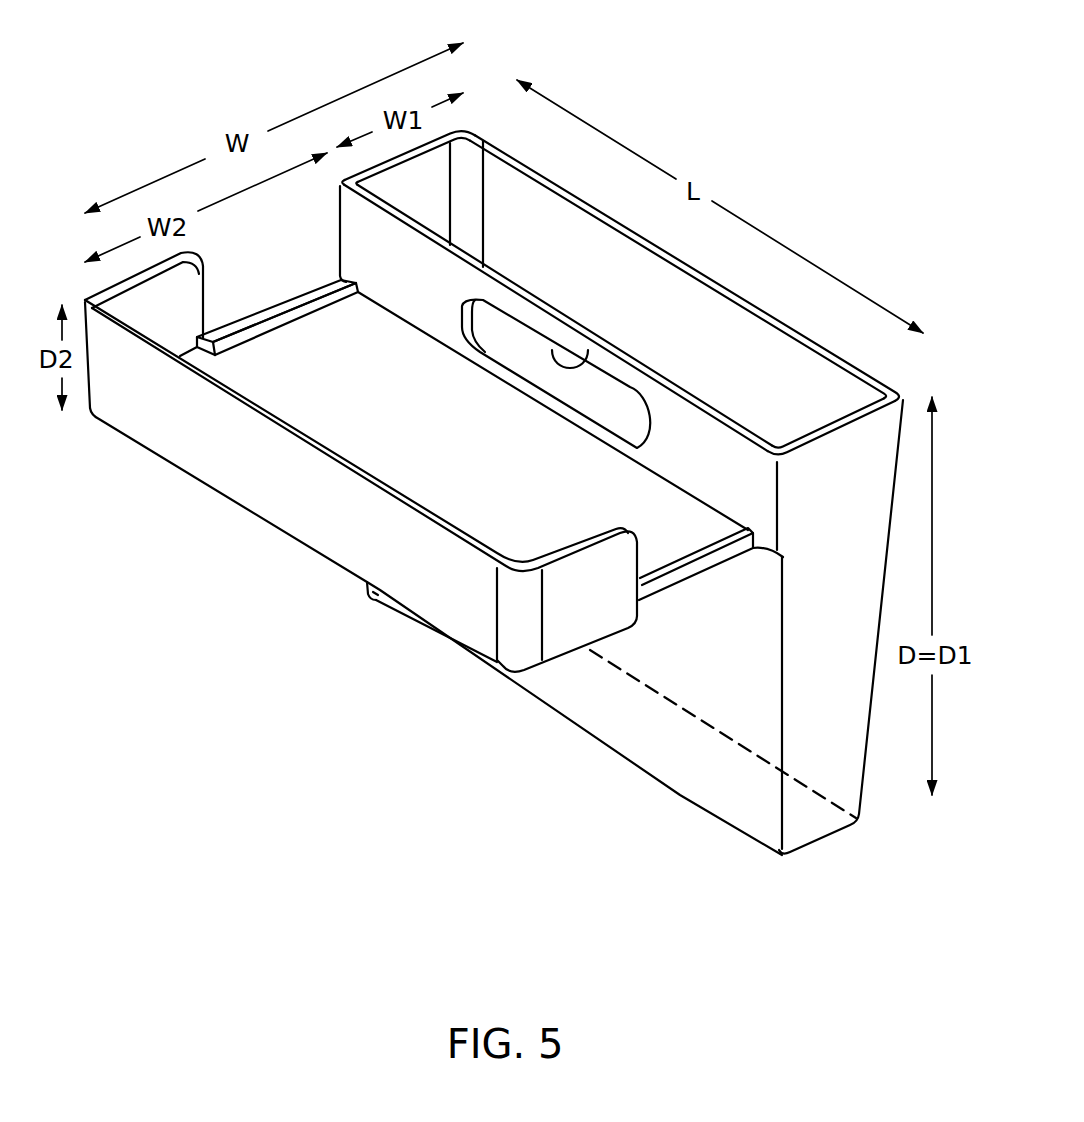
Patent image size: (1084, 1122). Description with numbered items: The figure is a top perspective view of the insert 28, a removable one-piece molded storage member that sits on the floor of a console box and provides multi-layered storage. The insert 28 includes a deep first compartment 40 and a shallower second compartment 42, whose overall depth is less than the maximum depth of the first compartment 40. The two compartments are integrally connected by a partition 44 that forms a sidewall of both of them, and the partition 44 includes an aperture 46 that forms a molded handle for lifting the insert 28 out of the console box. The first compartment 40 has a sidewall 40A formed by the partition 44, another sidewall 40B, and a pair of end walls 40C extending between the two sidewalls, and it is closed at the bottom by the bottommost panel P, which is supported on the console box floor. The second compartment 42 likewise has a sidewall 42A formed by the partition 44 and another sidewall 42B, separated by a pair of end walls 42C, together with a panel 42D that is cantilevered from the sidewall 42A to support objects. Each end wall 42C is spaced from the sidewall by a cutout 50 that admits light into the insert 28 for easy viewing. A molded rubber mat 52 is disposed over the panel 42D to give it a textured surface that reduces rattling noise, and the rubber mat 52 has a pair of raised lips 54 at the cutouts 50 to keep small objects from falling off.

The insert 28 is at (782, 110).
The first compartment 40 is at (488, 78).
The sidewall 40A is at (713, 410).
The sidewall 40B is at (795, 380).
The end walls 40C is at (408, 157).
The partition 44 is at (463, 257).
The second compartment 42 is at (158, 480).
The sidewall 42A is at (683, 432).
The sidewall 42B is at (419, 507).
The end walls 42C is at (173, 297).
The panel 42D is at (393, 357).
The aperture 46 is at (583, 370).
The cutout 50 is at (287, 265).
The molded rubber mat 52 is at (360, 407).
The raised lips 54 is at (262, 328).
The bottommost panel P is at (713, 815).